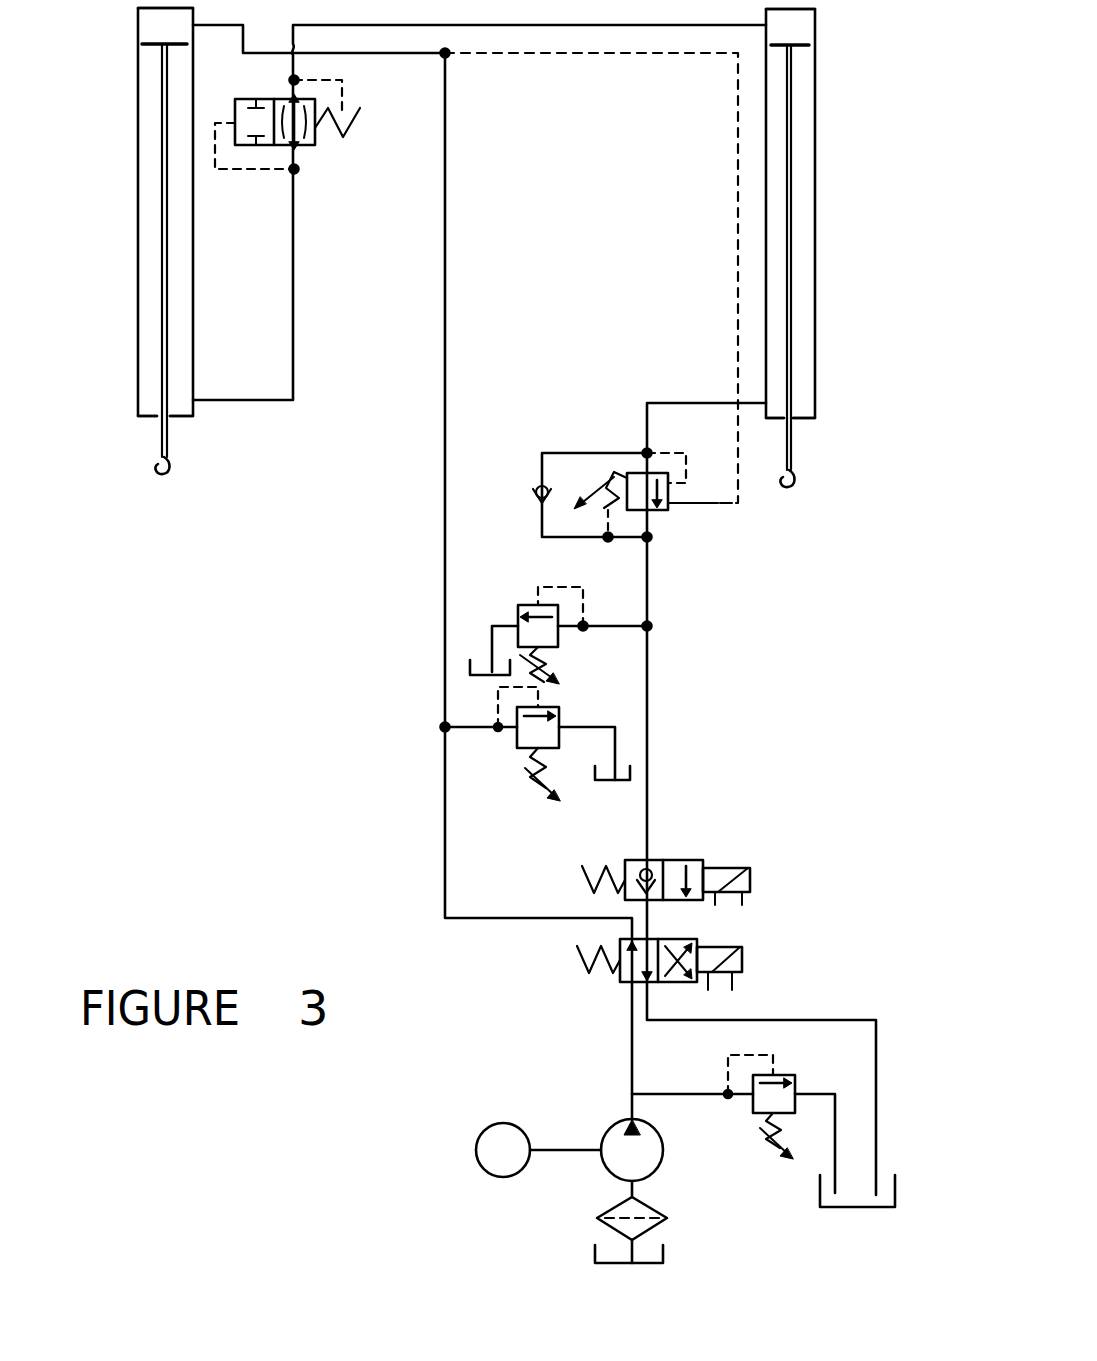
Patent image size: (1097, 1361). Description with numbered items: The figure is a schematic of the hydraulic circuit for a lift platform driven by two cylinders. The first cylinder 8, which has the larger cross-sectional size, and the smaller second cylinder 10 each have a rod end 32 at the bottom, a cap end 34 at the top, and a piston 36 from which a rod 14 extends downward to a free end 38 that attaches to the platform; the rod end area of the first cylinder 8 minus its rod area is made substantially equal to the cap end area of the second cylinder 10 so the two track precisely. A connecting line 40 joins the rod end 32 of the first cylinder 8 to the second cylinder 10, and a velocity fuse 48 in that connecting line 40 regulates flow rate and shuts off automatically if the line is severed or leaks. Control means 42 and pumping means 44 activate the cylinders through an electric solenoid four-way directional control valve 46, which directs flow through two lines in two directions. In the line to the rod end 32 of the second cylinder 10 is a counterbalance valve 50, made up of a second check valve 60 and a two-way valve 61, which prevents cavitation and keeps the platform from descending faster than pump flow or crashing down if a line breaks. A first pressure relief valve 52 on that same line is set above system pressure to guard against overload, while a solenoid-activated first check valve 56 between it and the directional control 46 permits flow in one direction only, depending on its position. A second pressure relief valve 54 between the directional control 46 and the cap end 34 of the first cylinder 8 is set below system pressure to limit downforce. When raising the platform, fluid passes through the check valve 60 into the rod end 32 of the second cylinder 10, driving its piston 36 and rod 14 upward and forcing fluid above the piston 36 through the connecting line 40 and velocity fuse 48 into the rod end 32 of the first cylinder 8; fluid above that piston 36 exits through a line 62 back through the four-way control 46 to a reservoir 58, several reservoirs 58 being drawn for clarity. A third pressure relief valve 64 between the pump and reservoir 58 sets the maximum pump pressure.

The first cylinder 8 is at (138, 218).
The second cylinder 10 is at (766, 218).
The rod 14 is at (162, 283).
The rod end 32 is at (146, 408).
The cap end 34 is at (155, 22).
The piston 36 is at (153, 45).
The free end 38 is at (160, 485).
The connecting line 40 is at (523, 25).
The control means 42 is at (480, 1137).
The pumping means 44 is at (612, 1175).
The four-way directional control valve 46 is at (622, 983).
The velocity fuse 48 is at (306, 147).
The counterbalance valve 50 is at (603, 476).
The first pressure relief valve 52 is at (522, 607).
The second pressure relief valve 54 is at (520, 752).
The first check valve 56 is at (655, 860).
The reservoir 58 is at (470, 664).
The second check valve 60 is at (535, 497).
The two-way valve 61 is at (655, 512).
The line 62 is at (217, 25).
The third pressure relief valve 64 is at (775, 1073).